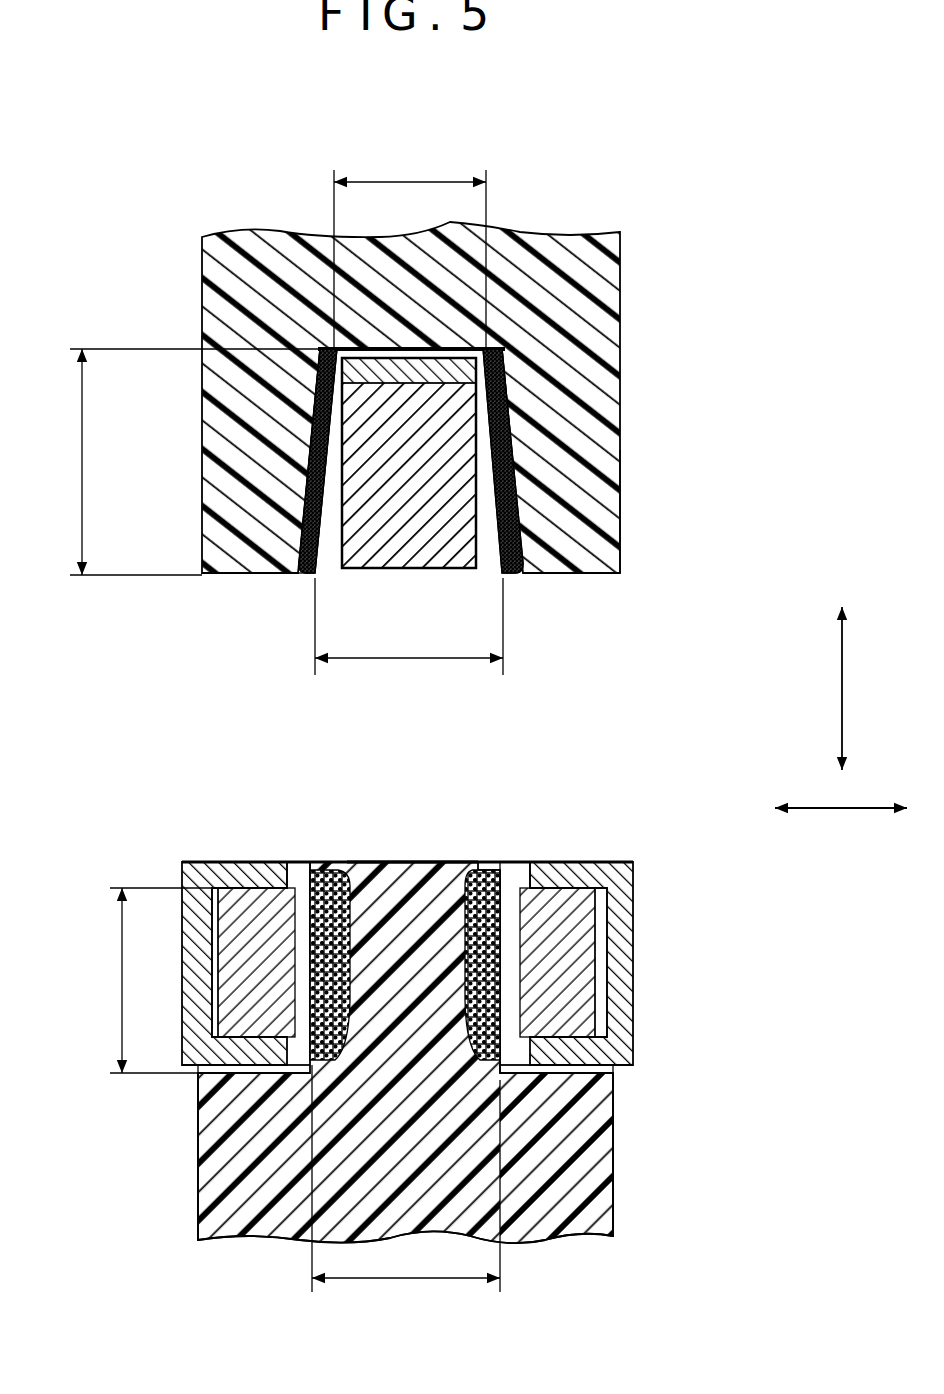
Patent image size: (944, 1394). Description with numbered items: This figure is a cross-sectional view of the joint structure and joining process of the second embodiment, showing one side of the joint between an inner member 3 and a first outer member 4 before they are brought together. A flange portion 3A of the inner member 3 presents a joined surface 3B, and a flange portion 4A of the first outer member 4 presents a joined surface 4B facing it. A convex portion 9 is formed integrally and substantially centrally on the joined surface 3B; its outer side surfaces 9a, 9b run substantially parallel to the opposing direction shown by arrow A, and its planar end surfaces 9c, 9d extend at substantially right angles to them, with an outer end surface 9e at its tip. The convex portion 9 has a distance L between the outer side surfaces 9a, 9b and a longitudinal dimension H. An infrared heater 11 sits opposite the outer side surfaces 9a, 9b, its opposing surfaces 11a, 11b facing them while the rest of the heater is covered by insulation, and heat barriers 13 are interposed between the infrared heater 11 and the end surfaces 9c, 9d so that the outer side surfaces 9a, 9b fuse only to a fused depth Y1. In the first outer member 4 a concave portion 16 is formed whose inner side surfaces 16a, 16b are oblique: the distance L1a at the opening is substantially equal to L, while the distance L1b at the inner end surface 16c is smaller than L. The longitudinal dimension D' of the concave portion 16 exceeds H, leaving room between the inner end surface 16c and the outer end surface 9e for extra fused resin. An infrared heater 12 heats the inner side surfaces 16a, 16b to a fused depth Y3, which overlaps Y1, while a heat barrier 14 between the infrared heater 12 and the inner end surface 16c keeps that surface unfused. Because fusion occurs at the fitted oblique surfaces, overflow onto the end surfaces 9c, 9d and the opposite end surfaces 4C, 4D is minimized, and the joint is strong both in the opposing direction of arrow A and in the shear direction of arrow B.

The inner member 3 is at (395, 1193).
The flange portion 3A is at (585, 1182).
The joined surface 3B is at (500, 838).
The first outer member 4 is at (285, 303).
The flange portion 4A is at (603, 536).
The joined surface 4B is at (530, 604).
The end surface 4C is at (257, 577).
The end surface 4D is at (575, 575).
The convex portion 9 is at (422, 903).
The outer side surface 9a is at (300, 987).
The outer side surface 9b is at (503, 977).
The end surface 9c is at (181, 1070).
The end surface 9d is at (620, 1068).
The outer end surface 9e is at (370, 866).
The infrared heater 11 is at (568, 956).
The opposing surface 11a is at (293, 880).
The opposing surface 11b is at (517, 917).
The infrared heater 12 is at (420, 475).
The heat barrier 13 is at (618, 1018).
The heat barrier 14 is at (465, 368).
The concave portion 16 is at (487, 568).
The inner side surface 16a is at (305, 493).
The inner side surface 16b is at (503, 456).
The inner end surface 16c is at (495, 352).
The fused depth Y1 is at (327, 883).
The fused depth Y3 is at (313, 418).
The distance between inner side surfaces on opening side L1a is at (402, 660).
The distance on inner end surface side L1b is at (404, 182).
The distance between outer side surfaces L is at (413, 1280).
The longitudinal dimension of convex portion H is at (122, 988).
The longitudinal dimension of concave portion D' is at (270, 462).
The arrow (opposing direction) A is at (842, 698).
The arrow (shear direction) B is at (848, 808).